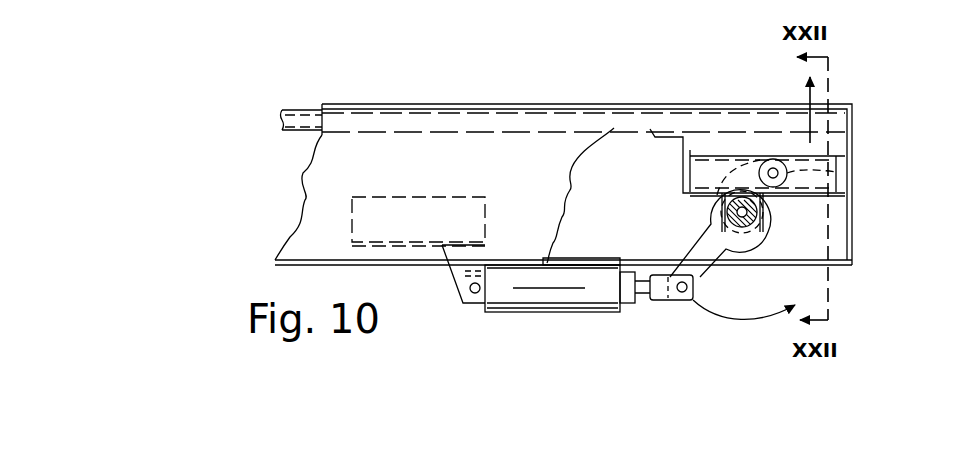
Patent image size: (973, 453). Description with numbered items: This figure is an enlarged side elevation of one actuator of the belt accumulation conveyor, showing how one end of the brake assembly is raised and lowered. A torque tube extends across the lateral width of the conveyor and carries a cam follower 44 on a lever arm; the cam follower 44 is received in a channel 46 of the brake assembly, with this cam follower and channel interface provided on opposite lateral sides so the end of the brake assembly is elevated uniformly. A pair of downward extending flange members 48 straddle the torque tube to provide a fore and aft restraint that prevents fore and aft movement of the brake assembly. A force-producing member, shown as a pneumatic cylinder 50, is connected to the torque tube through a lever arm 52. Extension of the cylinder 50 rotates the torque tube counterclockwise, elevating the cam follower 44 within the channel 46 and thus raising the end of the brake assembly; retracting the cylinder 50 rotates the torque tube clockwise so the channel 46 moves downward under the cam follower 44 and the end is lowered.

The cam follower 44 is at (845, 172).
The channel 46 is at (732, 157).
The flange members 48 is at (722, 207).
The lever arm 52 is at (708, 274).
The pneumatic cylinder 50 is at (537, 313).